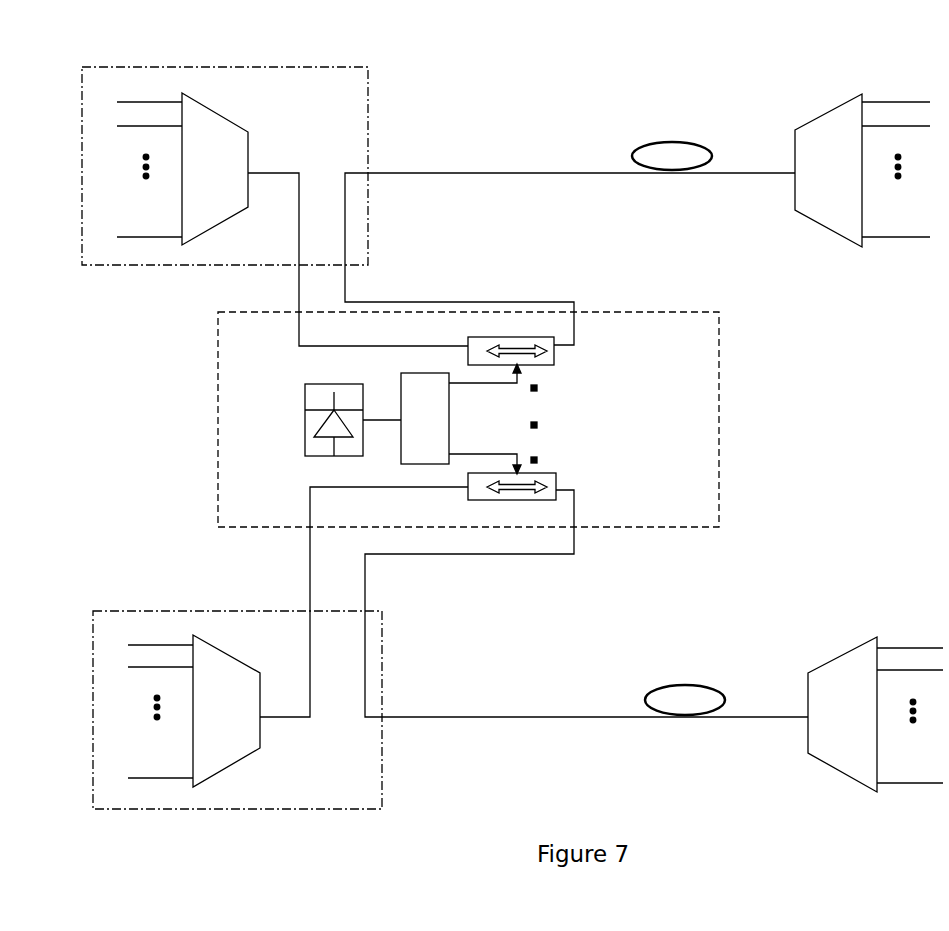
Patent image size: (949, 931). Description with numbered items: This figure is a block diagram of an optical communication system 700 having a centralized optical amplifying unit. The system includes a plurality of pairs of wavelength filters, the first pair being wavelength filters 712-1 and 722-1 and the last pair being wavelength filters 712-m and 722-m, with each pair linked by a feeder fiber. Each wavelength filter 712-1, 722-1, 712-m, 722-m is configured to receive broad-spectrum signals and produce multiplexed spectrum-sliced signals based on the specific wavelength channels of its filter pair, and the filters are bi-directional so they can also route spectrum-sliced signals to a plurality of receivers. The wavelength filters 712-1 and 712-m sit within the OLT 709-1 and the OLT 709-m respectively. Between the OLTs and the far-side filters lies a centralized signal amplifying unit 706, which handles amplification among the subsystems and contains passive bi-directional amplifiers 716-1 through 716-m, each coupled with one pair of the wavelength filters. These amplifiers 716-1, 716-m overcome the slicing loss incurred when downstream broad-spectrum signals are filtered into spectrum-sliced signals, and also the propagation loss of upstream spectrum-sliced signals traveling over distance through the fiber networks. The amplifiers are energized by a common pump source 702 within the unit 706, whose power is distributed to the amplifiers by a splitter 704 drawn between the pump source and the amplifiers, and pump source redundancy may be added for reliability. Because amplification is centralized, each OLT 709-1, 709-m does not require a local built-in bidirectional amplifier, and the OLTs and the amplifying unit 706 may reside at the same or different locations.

The optical communication system 700 is at (512, 424).
The common pump source 702 is at (255, 477).
The splitter 704 is at (409, 442).
The centralized signal amplifying unit 706 is at (724, 379).
The OLT 709-1 is at (360, 125).
The OLT 709-m is at (363, 794).
The wavelength filter 712-1 is at (182, 169).
The wavelength filter 712-m is at (194, 711).
The passive bi-directional amplifier 716-1 is at (645, 374).
The passive bi-directional amplifier 716-m is at (650, 497).
The wavelength filter 722-1 is at (862, 170).
The wavelength filter 722-m is at (875, 714).